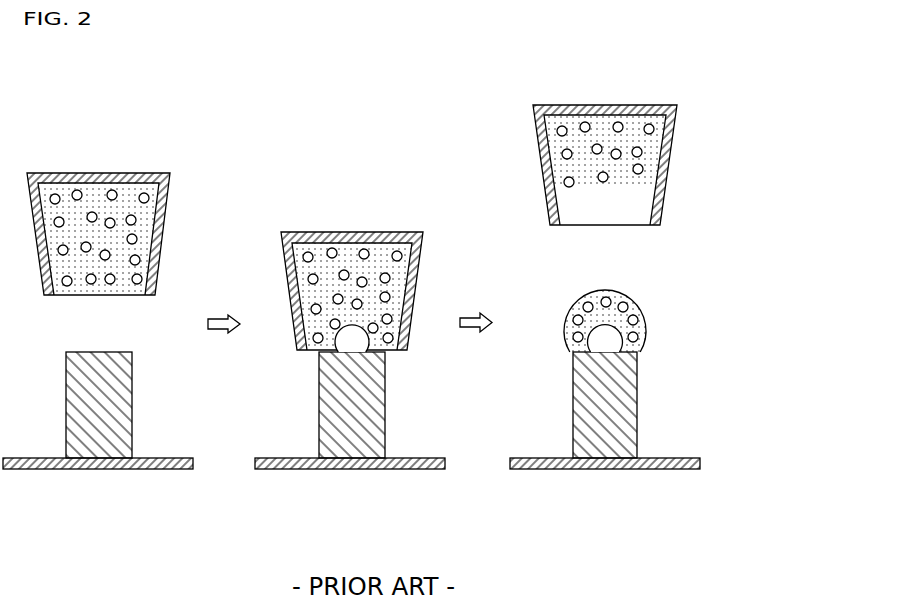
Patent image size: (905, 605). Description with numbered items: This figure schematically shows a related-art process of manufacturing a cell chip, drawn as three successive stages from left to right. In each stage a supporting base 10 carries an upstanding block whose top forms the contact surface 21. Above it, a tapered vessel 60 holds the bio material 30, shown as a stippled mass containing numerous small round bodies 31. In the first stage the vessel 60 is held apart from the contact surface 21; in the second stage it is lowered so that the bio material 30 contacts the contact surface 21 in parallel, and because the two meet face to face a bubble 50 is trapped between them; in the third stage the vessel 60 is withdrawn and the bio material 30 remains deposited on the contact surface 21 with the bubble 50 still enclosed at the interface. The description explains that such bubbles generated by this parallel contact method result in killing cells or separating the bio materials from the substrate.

The substrate 10 is at (100, 470).
The contact surface 21 is at (126, 352).
The bio material 30 is at (62, 197).
The conductive particles 31 is at (112, 192).
The solder bump 50 is at (337, 345).
The container 60 is at (166, 198).